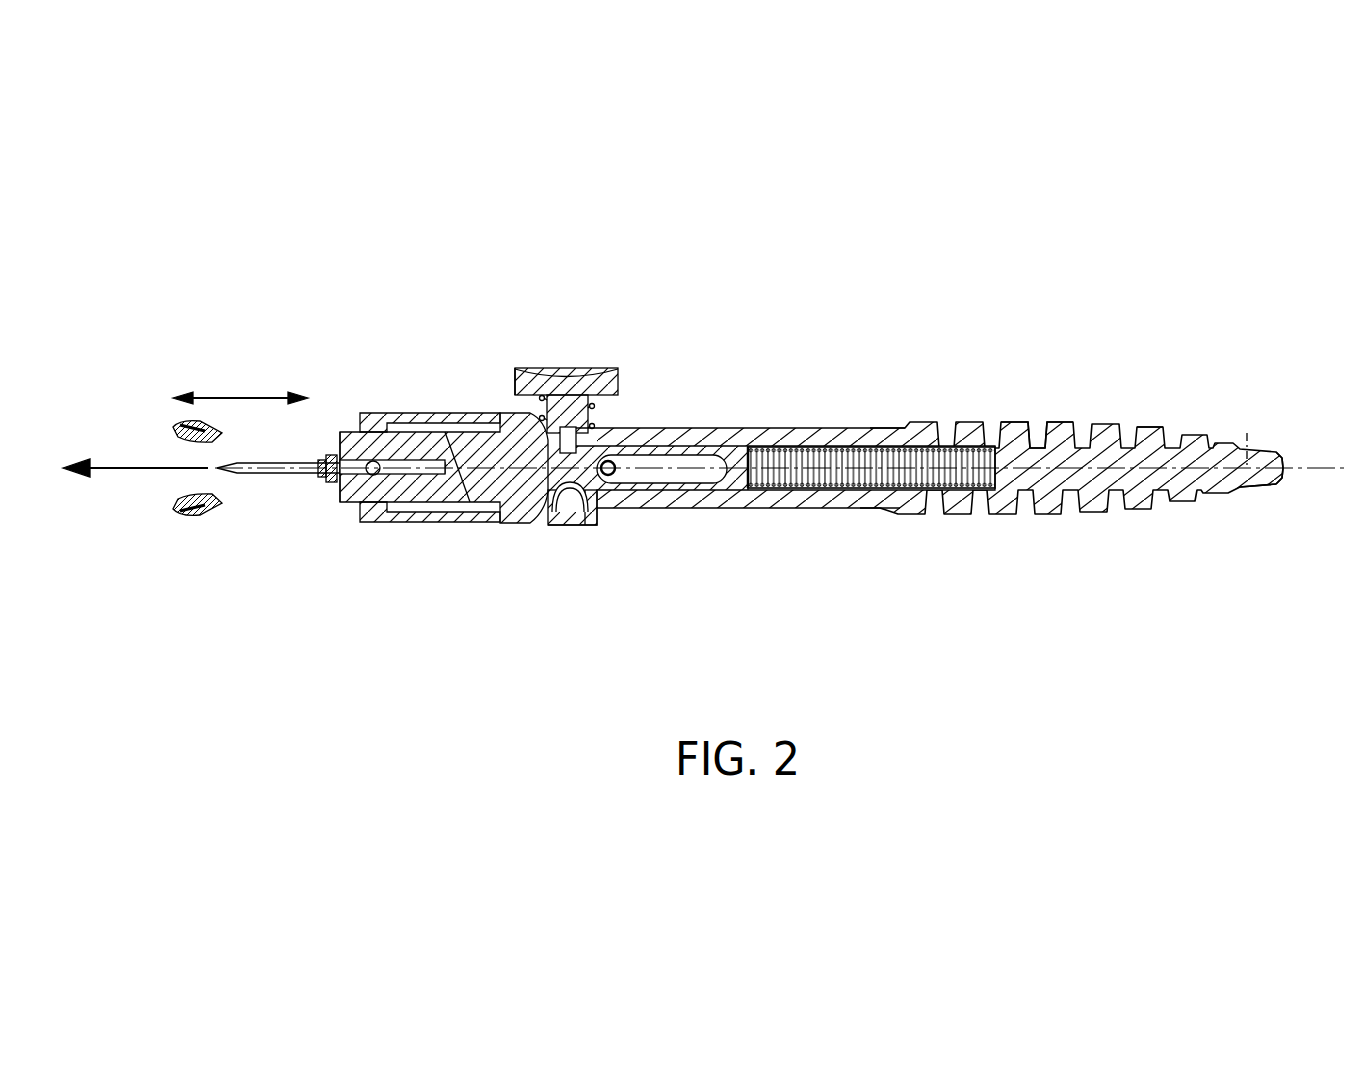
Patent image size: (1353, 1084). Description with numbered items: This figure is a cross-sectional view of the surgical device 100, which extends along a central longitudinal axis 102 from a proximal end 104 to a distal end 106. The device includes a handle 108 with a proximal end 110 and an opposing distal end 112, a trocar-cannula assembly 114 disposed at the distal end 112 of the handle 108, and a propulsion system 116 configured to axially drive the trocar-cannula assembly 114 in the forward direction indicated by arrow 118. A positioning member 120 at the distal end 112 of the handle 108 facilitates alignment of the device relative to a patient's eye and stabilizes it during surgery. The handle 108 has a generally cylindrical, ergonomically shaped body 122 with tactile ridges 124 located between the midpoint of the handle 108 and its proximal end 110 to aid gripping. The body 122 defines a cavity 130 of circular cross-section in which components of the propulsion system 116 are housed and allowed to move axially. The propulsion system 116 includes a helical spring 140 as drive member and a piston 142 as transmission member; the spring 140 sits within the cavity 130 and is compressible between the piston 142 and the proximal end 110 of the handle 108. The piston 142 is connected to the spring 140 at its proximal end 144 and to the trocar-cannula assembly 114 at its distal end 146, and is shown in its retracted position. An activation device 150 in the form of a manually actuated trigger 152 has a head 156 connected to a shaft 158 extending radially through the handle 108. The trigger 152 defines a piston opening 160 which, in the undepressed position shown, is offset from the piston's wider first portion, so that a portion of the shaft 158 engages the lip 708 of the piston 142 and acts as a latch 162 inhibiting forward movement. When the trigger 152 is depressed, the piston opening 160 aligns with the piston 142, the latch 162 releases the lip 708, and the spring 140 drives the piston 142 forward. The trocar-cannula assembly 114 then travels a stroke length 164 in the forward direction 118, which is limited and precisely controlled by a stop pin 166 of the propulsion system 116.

The surgical device 100 is at (704, 431).
The central longitudinal axis 102 is at (1247, 433).
The proximal end 104 is at (1280, 485).
The distal end 106 is at (180, 518).
The handle 108 is at (1153, 418).
The proximal end of handle 110 is at (1282, 452).
The distal end of handle 112 is at (350, 432).
The trocar-cannula assembly 114 is at (315, 492).
The propulsion system 116 is at (768, 424).
The arrow 118 is at (102, 470).
The positioning member 120 is at (392, 408).
The body 122 is at (890, 430).
The tactile ridges 124 is at (1078, 428).
The cavity 130 is at (870, 450).
The helical spring 140 is at (880, 505).
The piston 142 is at (490, 495).
The proximal end of piston 144 is at (760, 489).
The distal end of piston 146 is at (342, 495).
The activation device 150 is at (561, 375).
The trigger 152 is at (508, 376).
The head 156 is at (540, 368).
The shaft 158 is at (590, 418).
The piston opening 160 is at (585, 513).
The latch 162 is at (578, 520).
The stroke length 164 is at (220, 397).
The stop pin 166 is at (613, 475).
The lip 708 is at (560, 520).